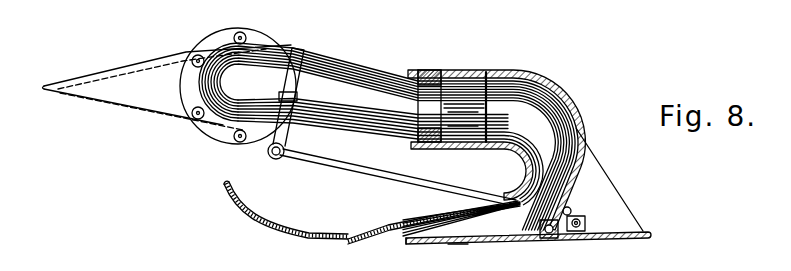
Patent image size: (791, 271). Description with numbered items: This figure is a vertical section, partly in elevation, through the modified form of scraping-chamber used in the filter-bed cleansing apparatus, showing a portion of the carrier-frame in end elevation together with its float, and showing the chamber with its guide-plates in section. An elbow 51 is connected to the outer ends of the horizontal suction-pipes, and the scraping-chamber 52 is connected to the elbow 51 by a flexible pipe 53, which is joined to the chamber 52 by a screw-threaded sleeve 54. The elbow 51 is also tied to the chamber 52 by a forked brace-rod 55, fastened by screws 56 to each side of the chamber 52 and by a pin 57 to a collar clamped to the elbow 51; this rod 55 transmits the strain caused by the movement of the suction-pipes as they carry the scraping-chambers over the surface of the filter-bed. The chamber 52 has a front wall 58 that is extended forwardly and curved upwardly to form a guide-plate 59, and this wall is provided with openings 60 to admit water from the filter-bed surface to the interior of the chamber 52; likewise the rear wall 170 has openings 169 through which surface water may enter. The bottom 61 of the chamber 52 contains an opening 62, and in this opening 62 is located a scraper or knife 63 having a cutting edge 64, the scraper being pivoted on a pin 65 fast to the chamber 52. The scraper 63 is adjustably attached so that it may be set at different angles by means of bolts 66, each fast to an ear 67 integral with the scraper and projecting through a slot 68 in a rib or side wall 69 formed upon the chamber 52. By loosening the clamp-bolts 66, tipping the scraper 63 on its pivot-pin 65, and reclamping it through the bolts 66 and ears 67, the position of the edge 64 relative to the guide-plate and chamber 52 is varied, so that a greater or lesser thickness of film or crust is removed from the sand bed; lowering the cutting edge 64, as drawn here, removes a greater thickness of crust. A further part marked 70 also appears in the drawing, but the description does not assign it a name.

The elbow 51 is at (238, 70).
The scraping-chamber 52 is at (530, 137).
The flexible pipe 53 is at (385, 62).
The screw-threaded sleeve 54 is at (460, 90).
The forked brace-rod 55 is at (348, 158).
The screws 56 is at (510, 176).
The pin 57 is at (267, 152).
The front wall 58 is at (302, 56).
The guide-plate 59 is at (240, 207).
The openings 60 is at (458, 208).
The bottom 61 is at (625, 230).
The opening 62 is at (403, 233).
The scraper or knife 63 is at (528, 231).
The cutting edge 64 is at (450, 236).
The pin 65 is at (563, 233).
The bolts 66 is at (574, 206).
The ear 67 is at (578, 215).
The slot 68 is at (563, 203).
The rib or side wall 69 is at (630, 193).
The wedge plate 70 is at (140, 88).
The openings 169 is at (553, 190).
The rear wall 170 is at (570, 123).